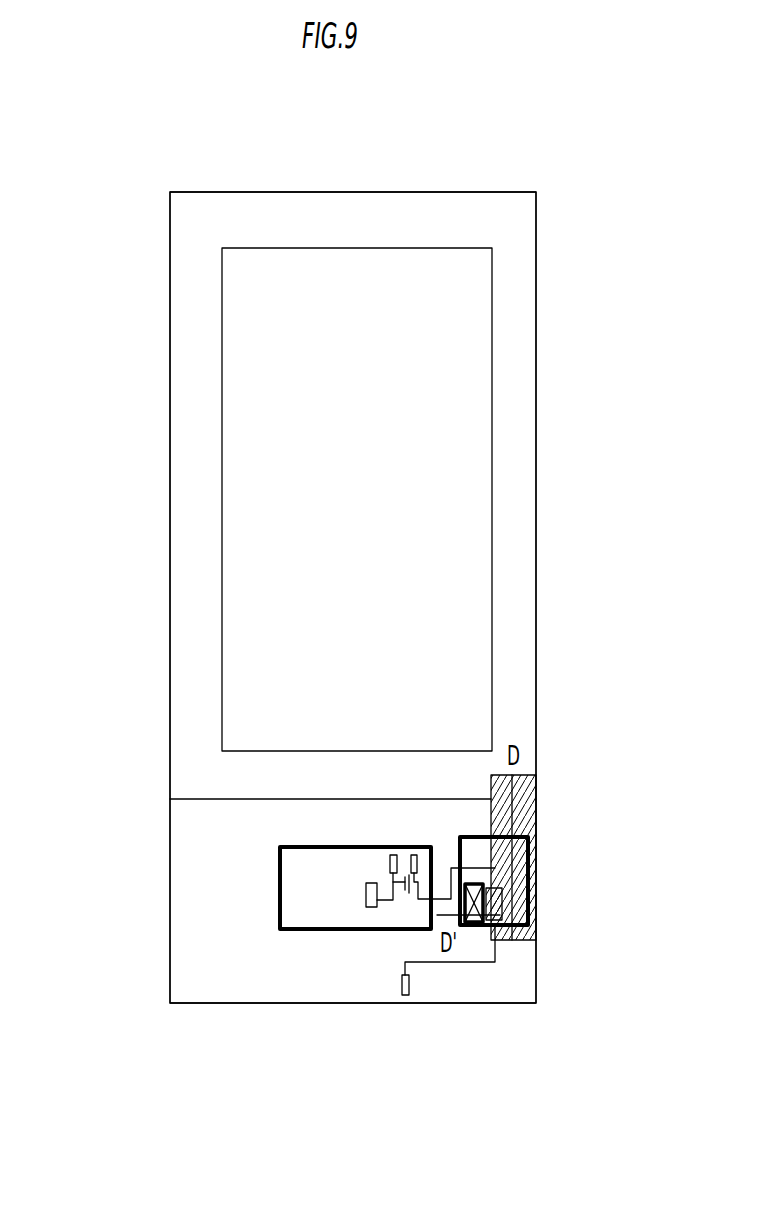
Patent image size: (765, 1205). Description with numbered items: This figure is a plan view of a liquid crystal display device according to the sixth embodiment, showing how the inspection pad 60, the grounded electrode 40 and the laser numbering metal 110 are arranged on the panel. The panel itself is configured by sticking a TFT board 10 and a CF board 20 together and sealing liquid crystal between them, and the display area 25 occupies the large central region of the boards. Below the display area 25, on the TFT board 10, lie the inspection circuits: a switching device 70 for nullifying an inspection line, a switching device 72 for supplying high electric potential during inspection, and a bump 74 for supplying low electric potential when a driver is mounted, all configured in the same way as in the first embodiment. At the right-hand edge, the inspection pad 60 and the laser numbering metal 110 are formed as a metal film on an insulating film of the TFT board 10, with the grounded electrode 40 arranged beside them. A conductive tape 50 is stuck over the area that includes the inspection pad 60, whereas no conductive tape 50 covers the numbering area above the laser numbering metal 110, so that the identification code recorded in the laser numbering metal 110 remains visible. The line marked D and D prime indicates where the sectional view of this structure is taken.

The TFT board 10 is at (163, 967).
The CF board 20 is at (183, 343).
The display area 25 is at (365, 288).
The grounded electrode 40 is at (528, 882).
The conductive tape 50 is at (535, 808).
The inspection pad 60 is at (500, 898).
The switching device 70 is at (401, 908).
The switching device 72 is at (364, 907).
The bump 74 is at (382, 865).
The laser numbering metal 110 is at (477, 923).